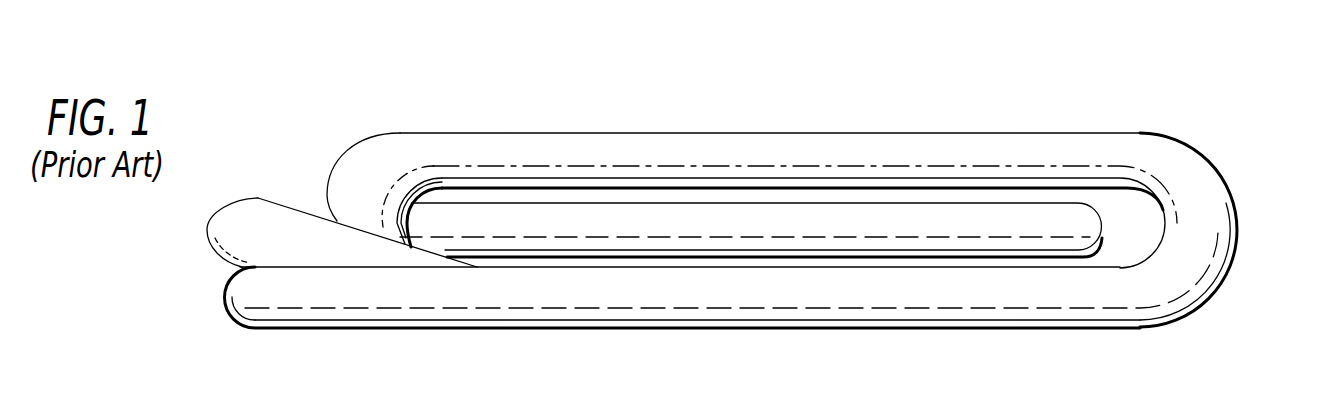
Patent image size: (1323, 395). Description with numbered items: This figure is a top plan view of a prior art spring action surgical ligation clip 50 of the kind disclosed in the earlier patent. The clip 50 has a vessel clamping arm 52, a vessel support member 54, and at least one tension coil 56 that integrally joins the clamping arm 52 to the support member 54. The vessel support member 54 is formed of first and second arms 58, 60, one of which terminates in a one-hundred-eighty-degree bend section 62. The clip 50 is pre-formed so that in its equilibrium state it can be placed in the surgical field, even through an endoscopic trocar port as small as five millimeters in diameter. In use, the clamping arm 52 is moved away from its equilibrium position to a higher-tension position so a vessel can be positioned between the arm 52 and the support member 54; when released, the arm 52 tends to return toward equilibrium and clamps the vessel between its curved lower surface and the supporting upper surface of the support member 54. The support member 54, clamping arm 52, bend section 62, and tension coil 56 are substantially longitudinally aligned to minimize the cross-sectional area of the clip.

The clip 50 is at (312, 95).
The vessel clamping arm 52 is at (1022, 210).
The vessel support member 54 is at (853, 134).
The tension coil 56 is at (251, 197).
The first arm 58 is at (583, 143).
The second arm 60 is at (668, 317).
The 180-degree bend section 62 is at (1213, 185).